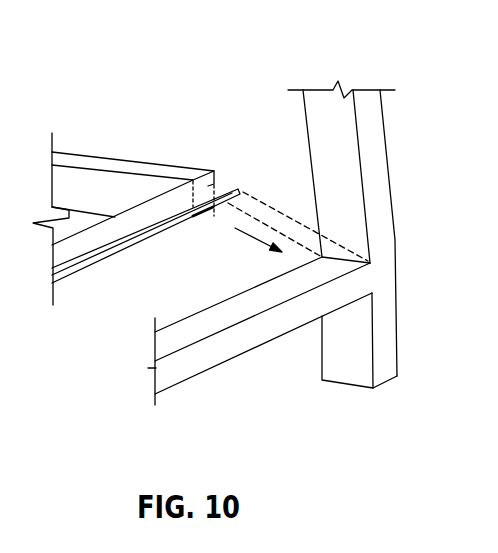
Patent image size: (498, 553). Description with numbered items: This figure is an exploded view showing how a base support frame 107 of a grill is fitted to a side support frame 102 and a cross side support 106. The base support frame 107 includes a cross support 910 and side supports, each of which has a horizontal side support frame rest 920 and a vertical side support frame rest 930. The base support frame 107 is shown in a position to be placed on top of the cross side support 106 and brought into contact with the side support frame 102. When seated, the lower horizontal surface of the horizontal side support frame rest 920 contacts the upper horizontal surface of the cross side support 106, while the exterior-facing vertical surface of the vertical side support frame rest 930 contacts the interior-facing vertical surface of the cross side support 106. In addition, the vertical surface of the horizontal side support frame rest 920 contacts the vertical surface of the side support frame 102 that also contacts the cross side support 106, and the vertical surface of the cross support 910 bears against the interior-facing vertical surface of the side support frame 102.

The cross support 910 is at (83, 158).
The base support frame 107 is at (115, 158).
The horizontal side support frame rest 920 is at (80, 247).
The vertical side support frame rest 930 is at (163, 237).
The side support frame 102 is at (380, 152).
The cross side support 106 is at (257, 291).